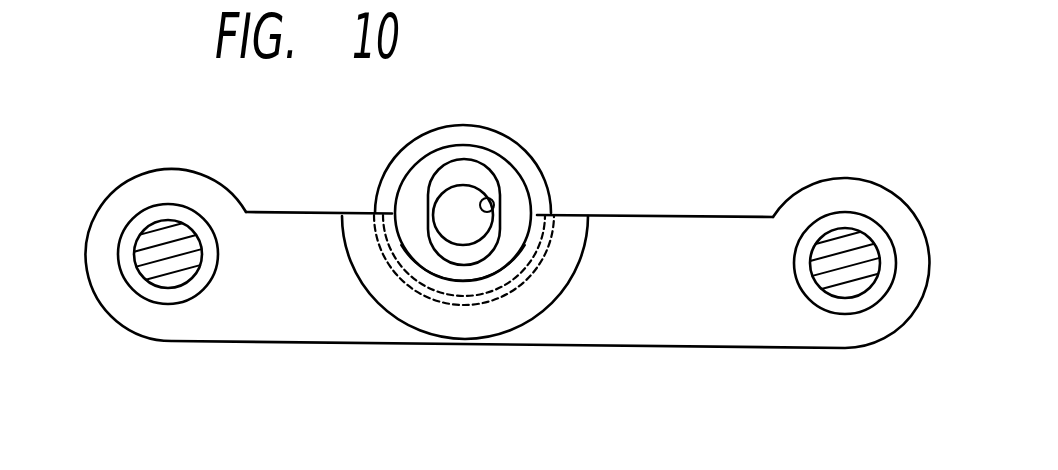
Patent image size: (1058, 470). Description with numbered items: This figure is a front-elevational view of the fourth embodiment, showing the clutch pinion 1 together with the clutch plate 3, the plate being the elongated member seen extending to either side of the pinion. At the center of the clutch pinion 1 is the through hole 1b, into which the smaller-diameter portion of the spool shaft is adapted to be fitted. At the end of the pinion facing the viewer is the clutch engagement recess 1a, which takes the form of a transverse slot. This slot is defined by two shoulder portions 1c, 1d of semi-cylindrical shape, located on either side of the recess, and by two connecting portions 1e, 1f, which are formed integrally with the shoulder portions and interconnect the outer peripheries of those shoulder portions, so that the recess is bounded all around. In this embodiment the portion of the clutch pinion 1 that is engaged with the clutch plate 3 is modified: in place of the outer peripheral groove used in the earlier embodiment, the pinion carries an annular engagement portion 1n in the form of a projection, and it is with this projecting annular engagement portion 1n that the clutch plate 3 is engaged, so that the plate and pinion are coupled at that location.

The clutch pinion 1 is at (543, 161).
The clutch engagement recess 1a is at (453, 165).
The through hole 1b is at (487, 208).
The shoulder portion 1c is at (410, 200).
The shoulder portion 1d is at (517, 225).
The connecting portion 1e is at (475, 152).
The connecting portion 1f is at (466, 275).
The annular engagement portion 1n is at (388, 168).
The clutch plate 3 is at (703, 206).